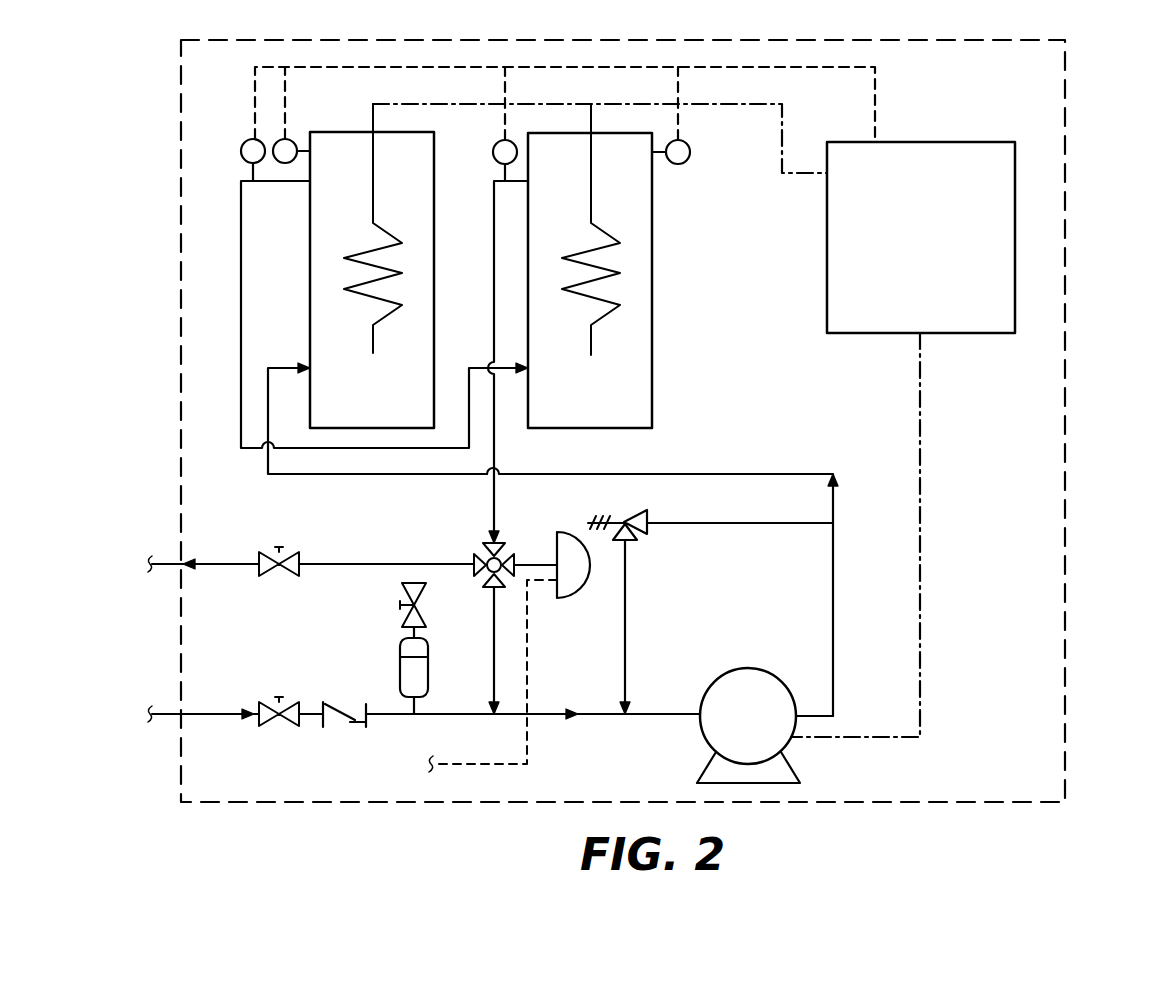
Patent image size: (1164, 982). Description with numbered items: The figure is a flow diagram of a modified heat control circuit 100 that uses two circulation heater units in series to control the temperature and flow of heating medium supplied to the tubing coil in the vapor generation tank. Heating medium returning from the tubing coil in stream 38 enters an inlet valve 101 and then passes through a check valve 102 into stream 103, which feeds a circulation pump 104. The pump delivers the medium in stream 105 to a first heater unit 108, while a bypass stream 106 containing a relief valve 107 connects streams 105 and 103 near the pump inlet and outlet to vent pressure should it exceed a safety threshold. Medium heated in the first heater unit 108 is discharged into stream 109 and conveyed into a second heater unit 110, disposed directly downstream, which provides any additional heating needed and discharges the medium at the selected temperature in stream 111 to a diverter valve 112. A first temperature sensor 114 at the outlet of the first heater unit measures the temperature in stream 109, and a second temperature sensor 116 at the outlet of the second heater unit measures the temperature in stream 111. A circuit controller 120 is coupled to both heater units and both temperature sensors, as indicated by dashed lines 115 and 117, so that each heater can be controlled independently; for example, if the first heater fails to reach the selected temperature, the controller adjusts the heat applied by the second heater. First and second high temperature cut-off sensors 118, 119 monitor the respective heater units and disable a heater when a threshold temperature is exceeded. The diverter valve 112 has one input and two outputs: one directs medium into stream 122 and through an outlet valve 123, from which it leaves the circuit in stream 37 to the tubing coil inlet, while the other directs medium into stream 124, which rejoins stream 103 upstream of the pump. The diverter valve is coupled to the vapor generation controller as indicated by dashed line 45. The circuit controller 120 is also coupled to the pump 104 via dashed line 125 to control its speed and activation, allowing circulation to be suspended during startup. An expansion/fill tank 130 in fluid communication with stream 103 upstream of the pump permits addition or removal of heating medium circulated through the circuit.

The circuit 100 is at (1066, 168).
The inlet valve 101 is at (279, 727).
The check valve 102 is at (348, 722).
The stream 103 is at (598, 717).
The circulation pump 104 is at (752, 670).
The stream 105 is at (580, 474).
The bypass stream 106 is at (730, 522).
The relief valve 107 is at (627, 518).
The first heater unit 108 is at (390, 406).
The stream 109 is at (238, 272).
The second heater unit 110 is at (609, 409).
The stream 111 is at (493, 235).
The diverter valve 112 is at (532, 555).
The first temperature sensor 114 is at (241, 151).
The dashed line 115 is at (773, 150).
The second temperature sensor 116 is at (493, 152).
The dashed line 117 is at (580, 70).
The first high temperature cut-off sensor 118 is at (287, 139).
The second high temperature cut-off sensor 119 is at (678, 165).
The circuit controller 120 is at (940, 252).
The stream 122 is at (348, 562).
The outlet valve 123 is at (279, 577).
The stream 124 is at (492, 655).
The dashed line 125 is at (921, 548).
The expansion/fill tank 130 is at (399, 649).
The stream 37 is at (163, 560).
The stream 38 is at (163, 710).
The dashed line 45 is at (455, 762).